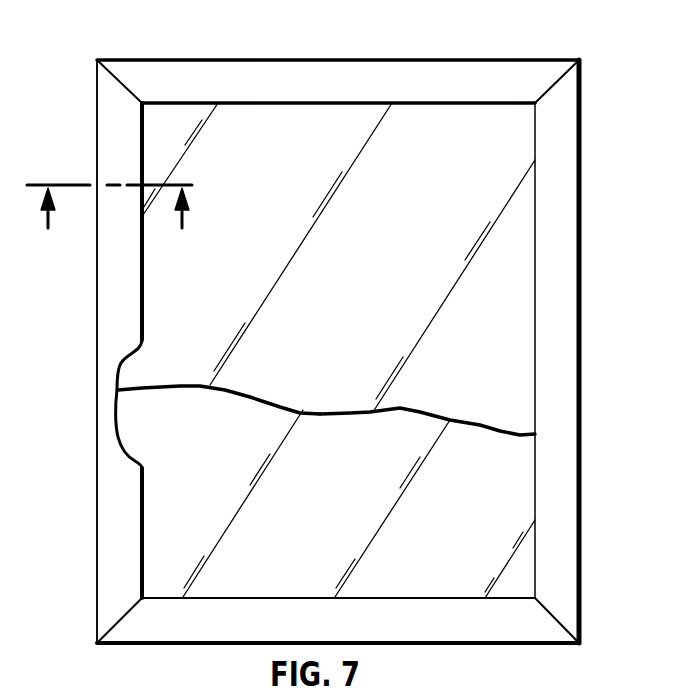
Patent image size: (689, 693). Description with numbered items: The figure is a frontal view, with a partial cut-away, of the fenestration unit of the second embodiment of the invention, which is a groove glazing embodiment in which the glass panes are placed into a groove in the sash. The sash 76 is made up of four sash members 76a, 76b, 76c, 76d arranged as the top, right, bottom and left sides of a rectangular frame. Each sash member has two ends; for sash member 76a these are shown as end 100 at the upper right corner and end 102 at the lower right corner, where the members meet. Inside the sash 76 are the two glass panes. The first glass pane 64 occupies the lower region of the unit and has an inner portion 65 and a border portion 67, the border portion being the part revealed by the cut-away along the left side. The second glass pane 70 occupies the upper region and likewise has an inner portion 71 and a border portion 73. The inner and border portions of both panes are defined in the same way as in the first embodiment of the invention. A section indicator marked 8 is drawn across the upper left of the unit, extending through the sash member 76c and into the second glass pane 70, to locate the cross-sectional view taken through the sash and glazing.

The sash 76 is at (555, 207).
The sash member 76a is at (568, 325).
The sash member 76b is at (448, 635).
The sash member 76c is at (113, 552).
The sash member 76d is at (358, 72).
The end 100 is at (557, 88).
The end 102 is at (563, 622).
The border portion 73 is at (133, 370).
The border portion 67 is at (133, 449).
The inner portion 71 is at (240, 373).
The inner portion 65 is at (320, 432).
The second glass pane 70 is at (413, 270).
The first glass pane 64 is at (458, 540).
The section line 8- 8 is at (109, 227).